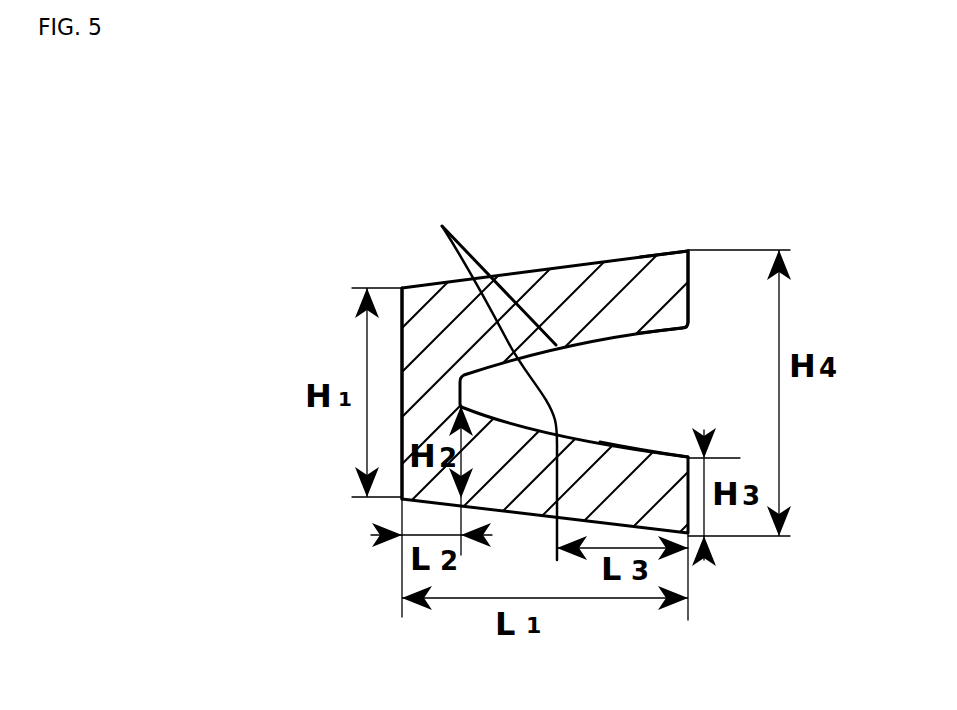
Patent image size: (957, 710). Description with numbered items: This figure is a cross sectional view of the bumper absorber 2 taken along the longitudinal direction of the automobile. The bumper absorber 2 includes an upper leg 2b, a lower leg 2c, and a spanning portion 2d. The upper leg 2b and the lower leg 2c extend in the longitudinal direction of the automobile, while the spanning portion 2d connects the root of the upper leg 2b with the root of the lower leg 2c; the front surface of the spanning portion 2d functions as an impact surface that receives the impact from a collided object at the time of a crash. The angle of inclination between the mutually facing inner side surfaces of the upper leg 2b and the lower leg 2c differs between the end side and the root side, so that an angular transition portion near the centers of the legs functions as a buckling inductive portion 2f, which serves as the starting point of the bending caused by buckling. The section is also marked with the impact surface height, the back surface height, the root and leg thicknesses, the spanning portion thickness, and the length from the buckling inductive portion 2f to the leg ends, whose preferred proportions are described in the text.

The bumper absorber 2 is at (547, 257).
The upper leg 2b is at (645, 268).
The lower leg 2c is at (627, 460).
The spanning portion 2d is at (437, 313).
The buckling inductive portion 2f is at (442, 226).